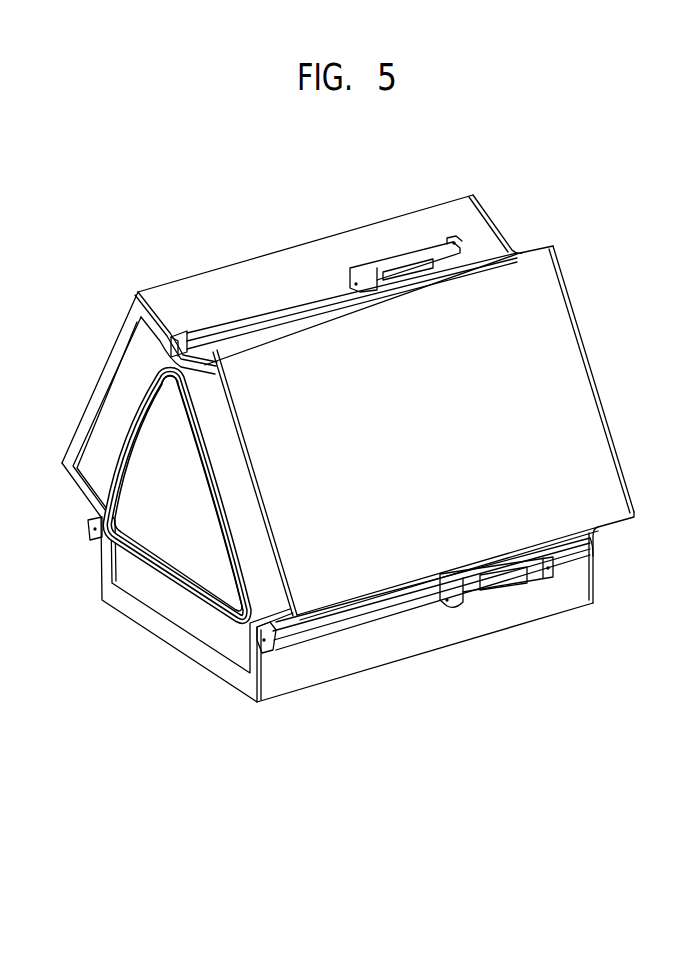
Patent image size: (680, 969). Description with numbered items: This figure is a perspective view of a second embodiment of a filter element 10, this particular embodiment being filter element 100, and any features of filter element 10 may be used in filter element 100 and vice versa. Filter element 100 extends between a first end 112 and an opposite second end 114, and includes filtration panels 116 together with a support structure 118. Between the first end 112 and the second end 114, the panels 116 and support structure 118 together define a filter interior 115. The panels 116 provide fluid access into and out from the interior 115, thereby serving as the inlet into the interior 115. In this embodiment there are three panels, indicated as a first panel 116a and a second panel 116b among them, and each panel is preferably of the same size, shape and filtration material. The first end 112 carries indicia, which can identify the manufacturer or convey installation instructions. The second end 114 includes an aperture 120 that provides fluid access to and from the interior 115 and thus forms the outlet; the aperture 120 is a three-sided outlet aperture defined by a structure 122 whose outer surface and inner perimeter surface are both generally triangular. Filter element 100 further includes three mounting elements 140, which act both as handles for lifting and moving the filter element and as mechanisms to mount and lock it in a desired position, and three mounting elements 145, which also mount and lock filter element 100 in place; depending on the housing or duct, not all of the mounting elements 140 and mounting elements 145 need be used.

The filter element 10 is at (108, 266).
The filter element 100 is at (207, 253).
The first end 112 is at (485, 208).
The second end 114 is at (117, 427).
The filter interior 115 is at (193, 492).
The filtration panels 116 is at (532, 328).
The first panel 116a is at (527, 430).
The second panel 116b is at (106, 358).
The support structure 118 is at (307, 263).
The aperture 120 is at (243, 552).
The structure 122 is at (118, 522).
The mounting elements 140 is at (400, 258).
The mounting elements 145 is at (192, 333).